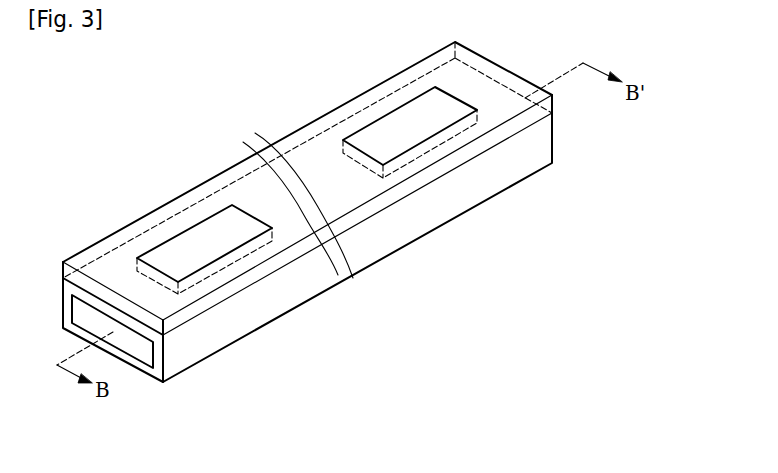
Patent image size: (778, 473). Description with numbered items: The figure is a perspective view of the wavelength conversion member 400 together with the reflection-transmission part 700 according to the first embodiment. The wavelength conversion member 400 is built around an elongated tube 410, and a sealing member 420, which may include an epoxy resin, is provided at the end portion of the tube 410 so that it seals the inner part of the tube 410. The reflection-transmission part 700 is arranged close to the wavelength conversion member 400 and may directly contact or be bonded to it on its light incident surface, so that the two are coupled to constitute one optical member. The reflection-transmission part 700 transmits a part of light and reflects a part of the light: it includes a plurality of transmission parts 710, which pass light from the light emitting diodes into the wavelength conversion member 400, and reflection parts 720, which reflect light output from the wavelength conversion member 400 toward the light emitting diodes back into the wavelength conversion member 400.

The wavelength conversion member 400 is at (84, 128).
The tube 410 is at (492, 183).
The sealing member 420 is at (138, 352).
The reflection-transmission part 700 is at (307, 241).
The transmission parts 710 is at (212, 253).
The reflection parts 720 is at (167, 305).